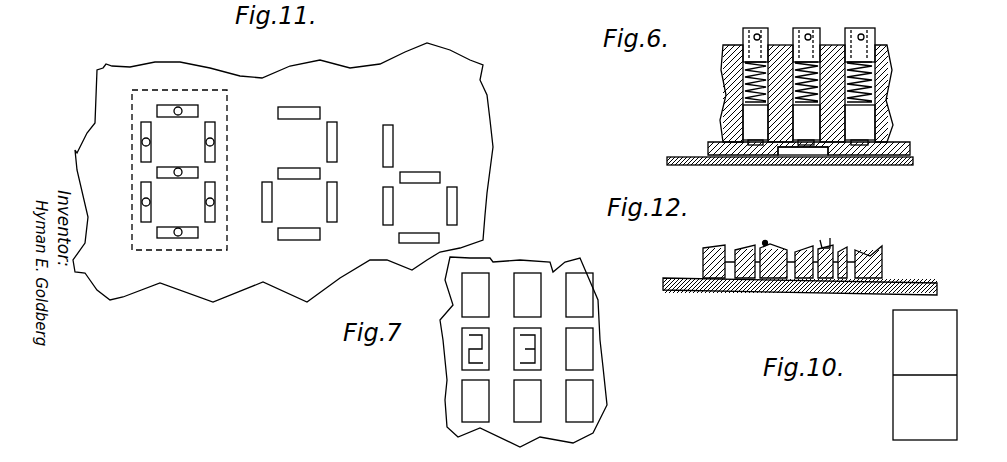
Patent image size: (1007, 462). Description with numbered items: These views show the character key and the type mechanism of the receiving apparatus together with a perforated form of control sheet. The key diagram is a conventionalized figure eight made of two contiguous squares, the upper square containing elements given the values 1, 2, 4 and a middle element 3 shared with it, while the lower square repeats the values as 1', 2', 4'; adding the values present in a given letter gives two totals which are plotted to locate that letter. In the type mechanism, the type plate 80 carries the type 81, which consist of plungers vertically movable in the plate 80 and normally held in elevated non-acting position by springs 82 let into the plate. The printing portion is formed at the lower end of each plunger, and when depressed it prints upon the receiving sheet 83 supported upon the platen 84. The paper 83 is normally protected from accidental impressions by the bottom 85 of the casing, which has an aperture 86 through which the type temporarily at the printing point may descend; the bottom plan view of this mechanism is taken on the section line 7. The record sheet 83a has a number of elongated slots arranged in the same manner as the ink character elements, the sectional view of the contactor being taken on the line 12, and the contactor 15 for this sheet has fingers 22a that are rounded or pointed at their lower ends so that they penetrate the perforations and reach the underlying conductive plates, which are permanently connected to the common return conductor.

In FIG. 10, the character element value 1 is at (885, 350).
In FIG. 10, the character element value 2 is at (926, 303).
In FIG. 10, the middle segment position 3 is at (925, 375).
In FIG. 10, the character element value 4 is at (967, 350).
In FIG. 10, the lower left segment position 1' is at (877, 413).
In FIG. 10, the lower right segment position 2' is at (969, 413).
In FIG. 10, the bottom segment position 4' is at (921, 453).
In FIG. 6, the section line 7— 7 is at (706, 142).
In FIG. 11, the section line 12- 12 is at (180, 290).
In FIG. 12, the plate 15 is at (742, 291).
In FIG. 11, the fingers 22a is at (212, 205).
In FIG. 12, the fingers 22a is at (810, 235).
In FIG. 7, the type plate 80 is at (552, 277).
In FIG. 6, the type plate 80 is at (887, 82).
In FIG. 7, the type 81 is at (525, 357).
In FIG. 6, the type 81 is at (755, 111).
In FIG. 6, the springs 82 is at (820, 55).
In FIG. 6, the receiving sheet 83 is at (815, 160).
In FIG. 11, the record sheet 83a is at (478, 98).
In FIG. 12, the record sheet 83a is at (912, 284).
In FIG. 6, the platen 84 is at (727, 162).
In FIG. 7, the bottom of the casing 85 is at (603, 335).
In FIG. 6, the bottom of the casing 85 is at (915, 131).
In FIG. 6, the aperture 86 is at (790, 152).